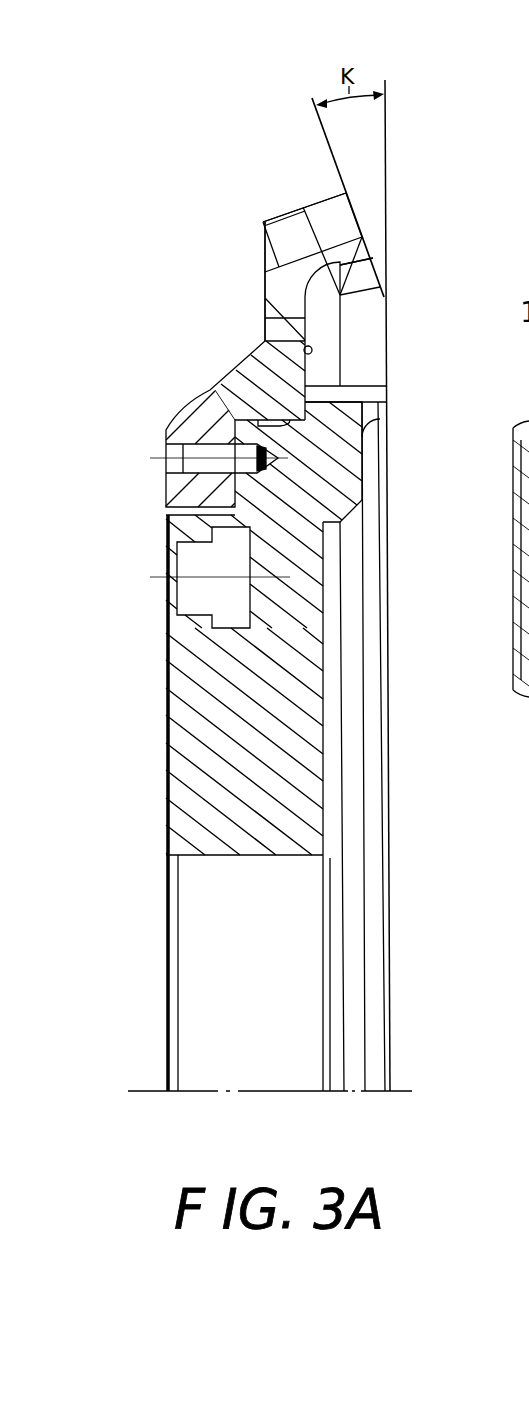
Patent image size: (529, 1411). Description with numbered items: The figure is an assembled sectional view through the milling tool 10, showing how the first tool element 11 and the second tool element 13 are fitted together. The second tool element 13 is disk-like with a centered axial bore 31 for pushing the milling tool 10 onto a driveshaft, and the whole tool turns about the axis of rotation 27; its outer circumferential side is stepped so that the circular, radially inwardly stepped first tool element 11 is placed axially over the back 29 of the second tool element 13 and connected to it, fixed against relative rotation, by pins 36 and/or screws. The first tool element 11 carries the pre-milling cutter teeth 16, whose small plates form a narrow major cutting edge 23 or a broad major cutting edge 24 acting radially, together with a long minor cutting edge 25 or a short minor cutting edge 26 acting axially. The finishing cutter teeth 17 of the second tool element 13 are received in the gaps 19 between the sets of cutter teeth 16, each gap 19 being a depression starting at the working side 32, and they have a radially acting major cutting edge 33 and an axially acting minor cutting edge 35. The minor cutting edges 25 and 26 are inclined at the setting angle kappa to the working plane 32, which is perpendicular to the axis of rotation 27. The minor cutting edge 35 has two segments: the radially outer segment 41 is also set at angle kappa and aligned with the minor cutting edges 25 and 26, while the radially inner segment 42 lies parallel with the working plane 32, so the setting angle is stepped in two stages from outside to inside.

The milling tool 10 is at (179, 211).
The first tool element 11 is at (192, 392).
The second tool element 13 is at (168, 668).
The cutter teeth 16 is at (303, 205).
The cutter teeth 17 is at (265, 298).
The gap 19 is at (333, 323).
The major cutting edge 23 is at (320, 195).
The major cutting edge 24 is at (304, 207).
The minor cutting edge 25 is at (354, 213).
The minor cutting edge 26 is at (351, 266).
The axis of rotation 27 is at (143, 1090).
The back 29 is at (165, 745).
The axial bore 31 is at (205, 855).
The working side 32 is at (388, 852).
The major cutting edge 33 is at (349, 266).
The minor cutting edge 35 is at (386, 325).
The pins 36 is at (183, 450).
The cutting edge segment 41 is at (380, 271).
The cutting edge segment 42 is at (388, 360).